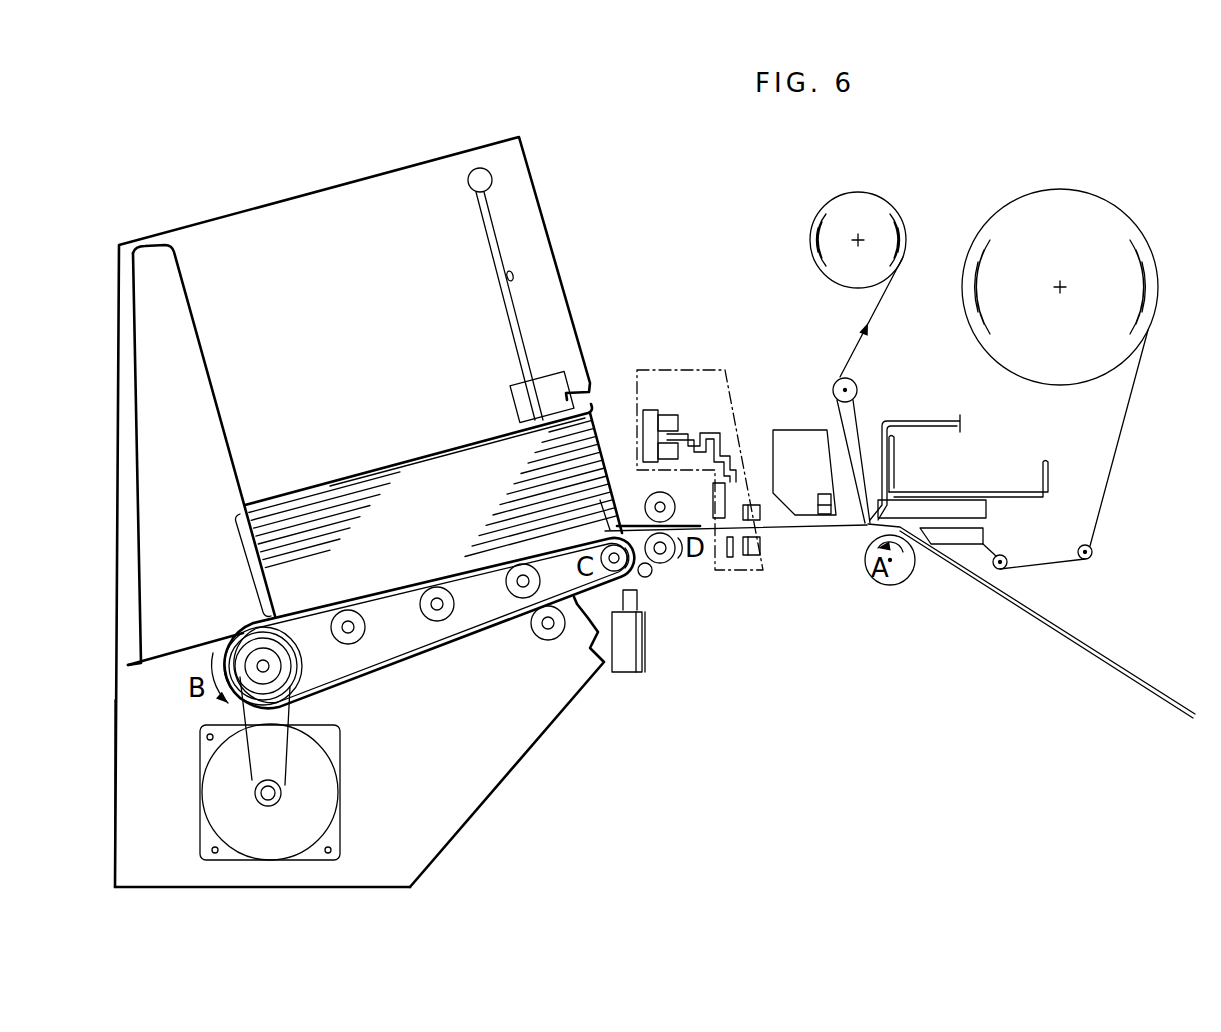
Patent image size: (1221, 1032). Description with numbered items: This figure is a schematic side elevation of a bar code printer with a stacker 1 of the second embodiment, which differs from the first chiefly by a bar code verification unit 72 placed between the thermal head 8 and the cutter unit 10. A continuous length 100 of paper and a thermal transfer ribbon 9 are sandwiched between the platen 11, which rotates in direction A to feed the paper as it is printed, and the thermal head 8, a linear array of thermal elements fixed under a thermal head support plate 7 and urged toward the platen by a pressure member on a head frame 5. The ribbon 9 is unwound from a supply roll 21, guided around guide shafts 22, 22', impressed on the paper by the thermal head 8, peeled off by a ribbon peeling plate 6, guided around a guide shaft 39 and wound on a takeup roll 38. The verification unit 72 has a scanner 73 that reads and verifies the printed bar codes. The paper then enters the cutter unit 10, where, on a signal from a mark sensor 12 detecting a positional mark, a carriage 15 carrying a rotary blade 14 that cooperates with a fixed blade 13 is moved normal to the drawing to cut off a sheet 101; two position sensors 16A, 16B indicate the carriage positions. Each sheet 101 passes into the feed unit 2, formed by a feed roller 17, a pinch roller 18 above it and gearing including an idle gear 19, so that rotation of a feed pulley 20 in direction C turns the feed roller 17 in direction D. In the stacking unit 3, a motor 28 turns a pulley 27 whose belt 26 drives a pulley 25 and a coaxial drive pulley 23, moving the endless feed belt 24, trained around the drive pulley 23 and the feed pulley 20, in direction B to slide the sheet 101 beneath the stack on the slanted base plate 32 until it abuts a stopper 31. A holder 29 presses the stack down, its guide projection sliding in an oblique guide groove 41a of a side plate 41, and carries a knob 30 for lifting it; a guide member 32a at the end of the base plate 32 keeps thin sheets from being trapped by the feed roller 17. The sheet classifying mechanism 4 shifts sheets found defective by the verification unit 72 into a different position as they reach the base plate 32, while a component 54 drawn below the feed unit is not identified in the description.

The stacker 1 is at (610, 247).
The feed unit 2 is at (628, 467).
The stacking unit 3 is at (460, 702).
The sheet classifying mechanism 4 is at (668, 677).
The head frame 5 is at (920, 424).
The ribbon peeling plate 6 is at (888, 498).
The thermal head support plate 7 is at (1002, 493).
The thermal head 8 is at (947, 505).
The thermal transfer ribbon 9 is at (1120, 455).
The cutter unit 10 is at (677, 365).
The platen 11 is at (897, 572).
The mark sensor 12 is at (760, 557).
The fixed blade 13 is at (729, 560).
The rotary blade 14 is at (866, 520).
The carriage 15 is at (700, 433).
The position sensor 16A is at (616, 371).
The position sensor 16B is at (652, 415).
The feed roller 17 is at (667, 557).
The pinch roller 18 is at (648, 497).
The idle gear 19 is at (643, 575).
The feed pulley 20 is at (607, 573).
The supply roll 21 is at (1125, 245).
The guide shaft 22 is at (1067, 533).
The guide shaft 22' is at (1004, 537).
The drive pulley 23 is at (290, 657).
The endless feed belt 24 is at (447, 640).
The pulley 25 is at (243, 637).
The belt 26 is at (288, 717).
The pulley 27 is at (280, 793).
The motor 28 is at (199, 795).
The holder 29 is at (407, 460).
The knob 30 is at (520, 387).
The stopper 31 is at (147, 475).
The base plate 32 is at (178, 652).
The guide member 32a is at (608, 515).
The takeup roll 38 is at (878, 208).
The guide shaft 39 is at (855, 380).
The side plate 41 is at (332, 217).
The oblique guide groove 41a is at (512, 275).
The actuator 54 is at (628, 674).
The bar code verification unit 72 is at (797, 428).
The scanner 73 is at (828, 517).
The continuous length of paper 100 is at (1073, 635).
The sheets of paper 101 is at (233, 565).